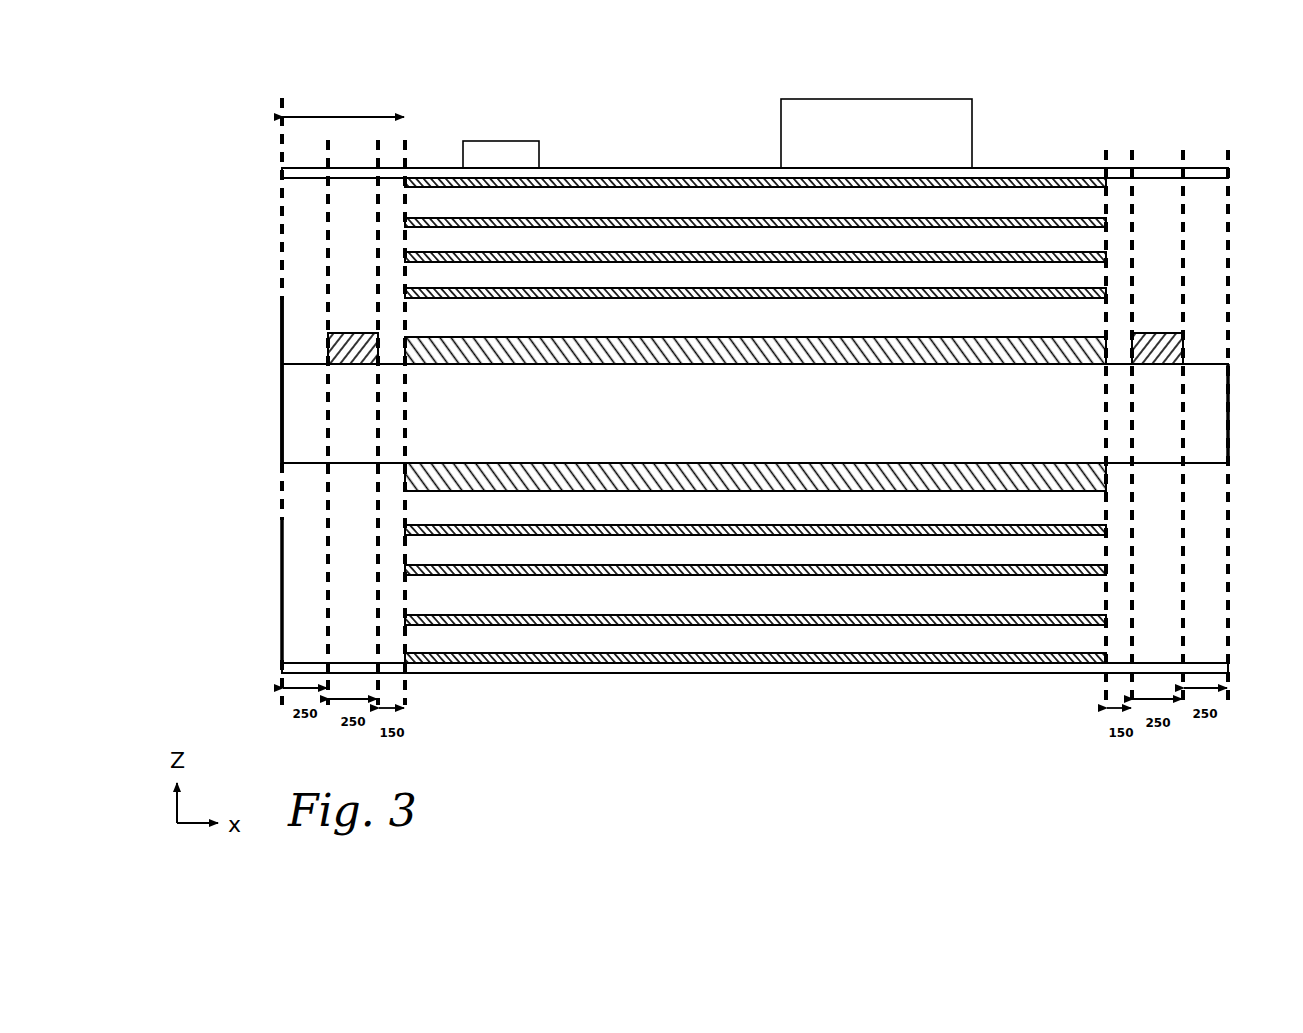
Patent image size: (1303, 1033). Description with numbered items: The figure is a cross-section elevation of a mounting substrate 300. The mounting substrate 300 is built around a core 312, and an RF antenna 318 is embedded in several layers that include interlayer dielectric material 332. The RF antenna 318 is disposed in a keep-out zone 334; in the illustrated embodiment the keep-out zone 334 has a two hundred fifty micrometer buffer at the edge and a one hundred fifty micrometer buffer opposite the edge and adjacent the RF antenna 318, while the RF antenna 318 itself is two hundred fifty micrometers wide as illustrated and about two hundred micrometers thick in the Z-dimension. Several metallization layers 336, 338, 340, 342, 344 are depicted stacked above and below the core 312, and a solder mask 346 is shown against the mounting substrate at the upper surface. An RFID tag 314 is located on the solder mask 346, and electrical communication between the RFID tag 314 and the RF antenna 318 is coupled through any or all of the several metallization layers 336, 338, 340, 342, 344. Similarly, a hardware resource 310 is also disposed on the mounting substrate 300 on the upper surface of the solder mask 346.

The mounting substrate 300 is at (1145, 110).
The hardware resource 310 is at (890, 118).
The core 312 is at (290, 430).
The RFID tag 314 is at (502, 147).
The RF antenna 318 is at (330, 350).
The interlayer dielectric material 332 is at (298, 275).
The keep-out zone 334 is at (352, 112).
The metallization layer 336 is at (692, 343).
The metallization layer 338 is at (725, 298).
The metallization layer 340 is at (757, 260).
The metallization layer 342 is at (1072, 215).
The metallization layer 344 is at (1030, 182).
The solder mask 346 is at (985, 175).